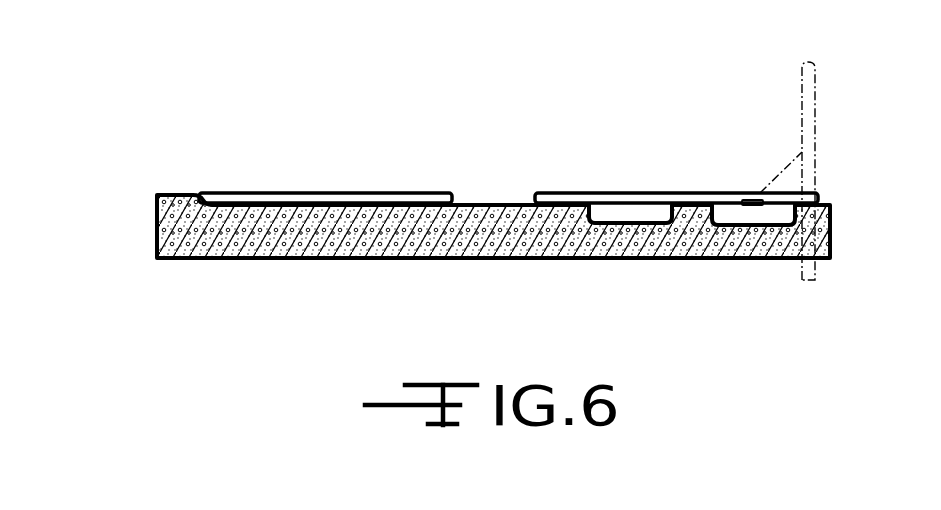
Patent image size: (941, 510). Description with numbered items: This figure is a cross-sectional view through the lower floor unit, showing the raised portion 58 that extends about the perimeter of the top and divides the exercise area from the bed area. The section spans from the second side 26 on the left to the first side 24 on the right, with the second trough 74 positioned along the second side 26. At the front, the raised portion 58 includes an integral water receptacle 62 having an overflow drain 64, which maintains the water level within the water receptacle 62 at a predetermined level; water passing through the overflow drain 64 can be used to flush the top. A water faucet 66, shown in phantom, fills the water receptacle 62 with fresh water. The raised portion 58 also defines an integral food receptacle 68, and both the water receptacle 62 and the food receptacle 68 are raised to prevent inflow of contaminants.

The first side 24 is at (820, 198).
The second side 26 is at (172, 195).
The raised portion 58 is at (227, 193).
The water receptacle 62 is at (717, 200).
The overflow drain 64 is at (753, 200).
The water faucet 66 is at (820, 88).
The food receptacle 68 is at (590, 200).
The second trough 74 is at (180, 238).